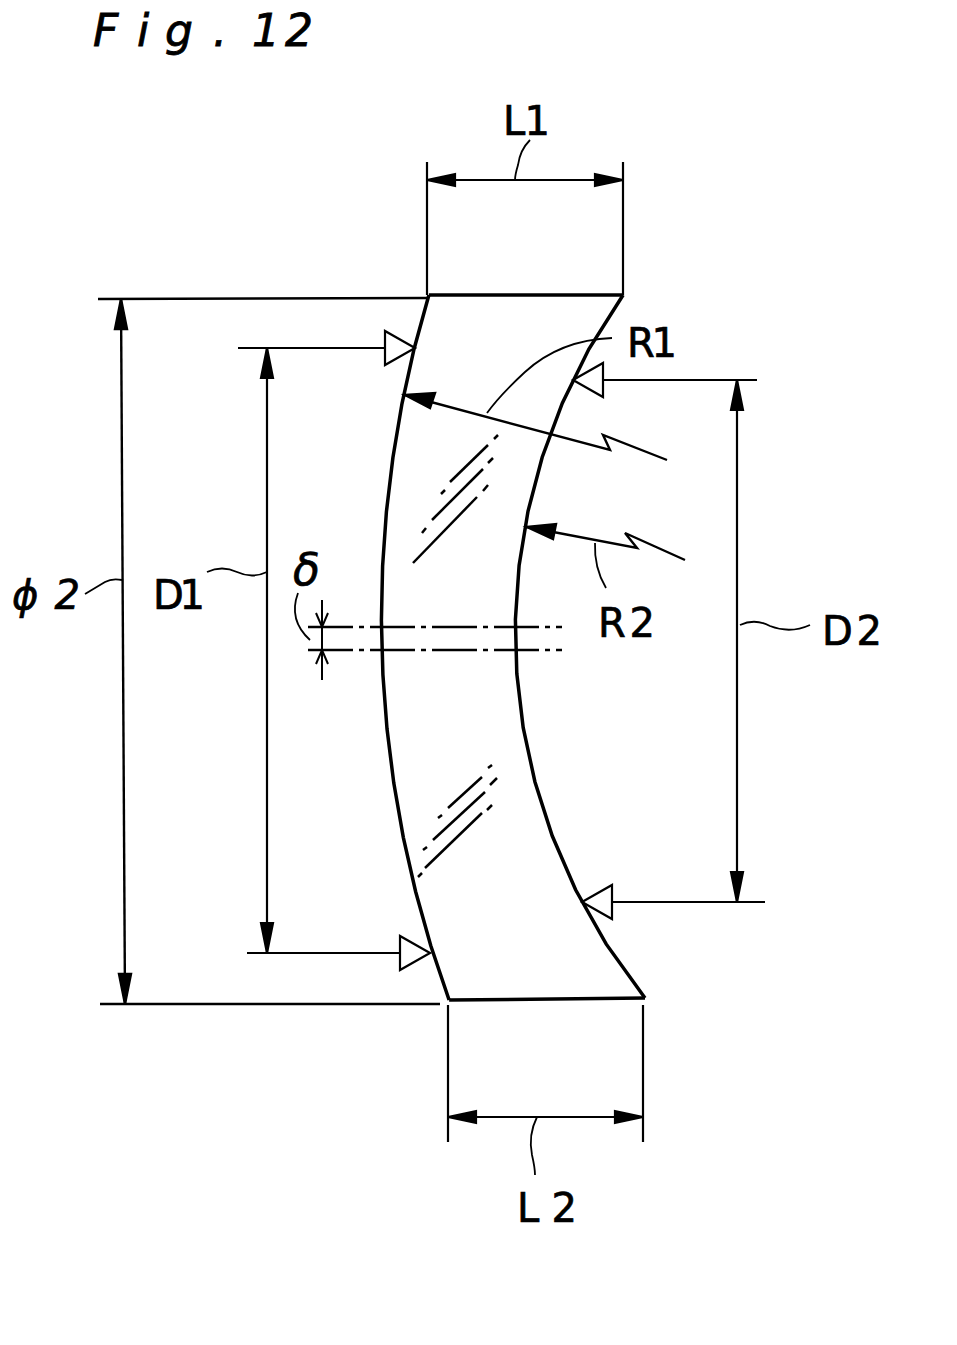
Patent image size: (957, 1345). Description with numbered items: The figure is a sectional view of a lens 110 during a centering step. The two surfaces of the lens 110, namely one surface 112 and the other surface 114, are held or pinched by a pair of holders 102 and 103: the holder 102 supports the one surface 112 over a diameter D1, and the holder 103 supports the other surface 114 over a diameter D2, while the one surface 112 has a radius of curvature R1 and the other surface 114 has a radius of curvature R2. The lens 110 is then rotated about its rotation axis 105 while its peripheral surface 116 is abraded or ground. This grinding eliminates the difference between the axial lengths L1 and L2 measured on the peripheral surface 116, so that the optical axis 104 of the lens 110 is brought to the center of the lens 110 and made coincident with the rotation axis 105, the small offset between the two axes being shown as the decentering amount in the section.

The holder 102 is at (402, 970).
The holder 103 is at (610, 913).
The optical axis 104 is at (347, 625).
The rotation axis 105 is at (351, 653).
The lens 110 is at (562, 615).
The one surface 112 is at (387, 730).
The other surface 114 is at (545, 808).
The peripheral surface 116 is at (492, 307).